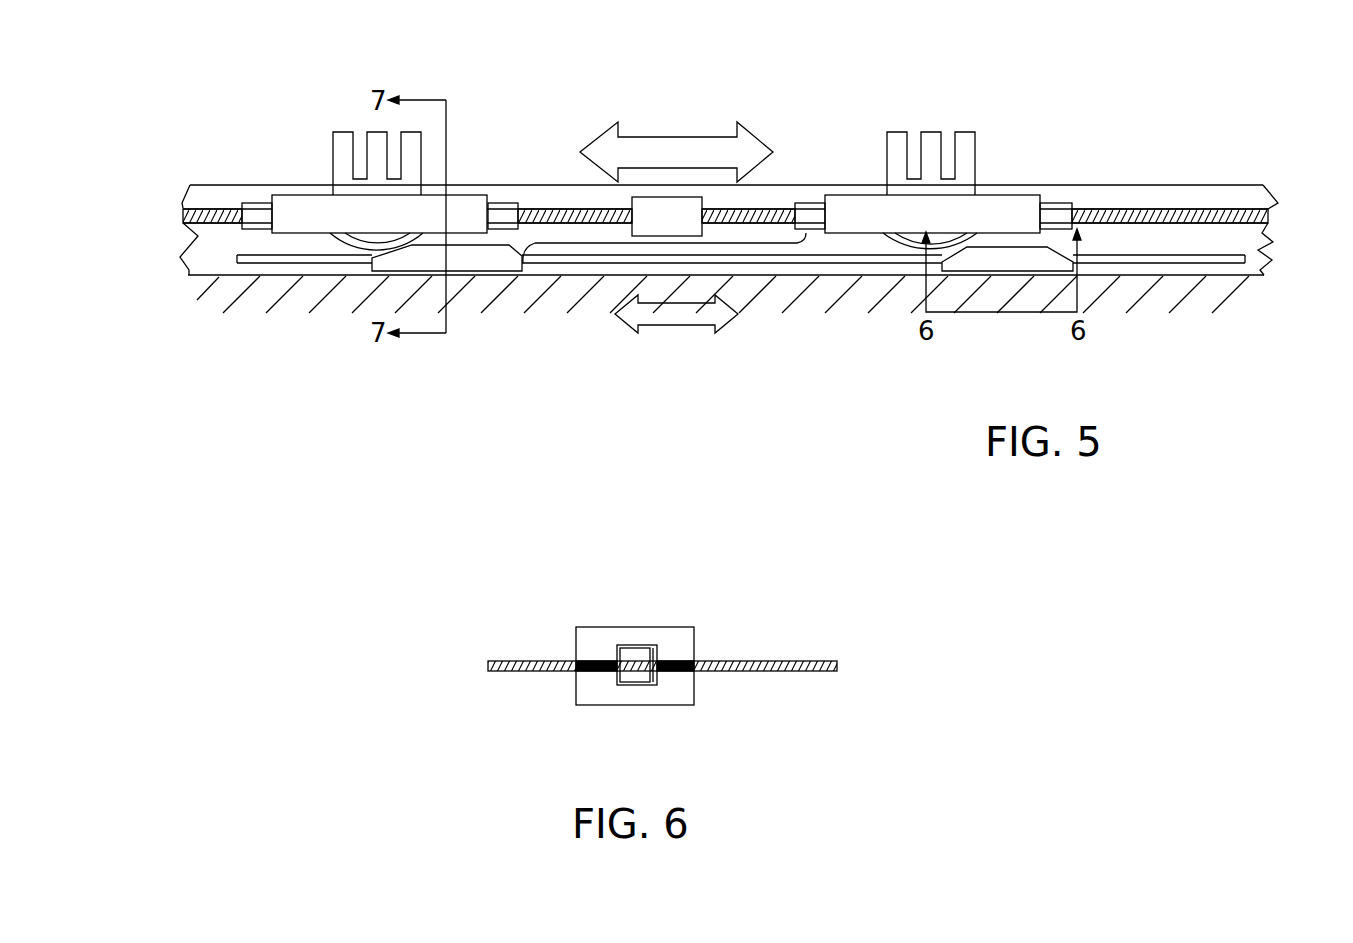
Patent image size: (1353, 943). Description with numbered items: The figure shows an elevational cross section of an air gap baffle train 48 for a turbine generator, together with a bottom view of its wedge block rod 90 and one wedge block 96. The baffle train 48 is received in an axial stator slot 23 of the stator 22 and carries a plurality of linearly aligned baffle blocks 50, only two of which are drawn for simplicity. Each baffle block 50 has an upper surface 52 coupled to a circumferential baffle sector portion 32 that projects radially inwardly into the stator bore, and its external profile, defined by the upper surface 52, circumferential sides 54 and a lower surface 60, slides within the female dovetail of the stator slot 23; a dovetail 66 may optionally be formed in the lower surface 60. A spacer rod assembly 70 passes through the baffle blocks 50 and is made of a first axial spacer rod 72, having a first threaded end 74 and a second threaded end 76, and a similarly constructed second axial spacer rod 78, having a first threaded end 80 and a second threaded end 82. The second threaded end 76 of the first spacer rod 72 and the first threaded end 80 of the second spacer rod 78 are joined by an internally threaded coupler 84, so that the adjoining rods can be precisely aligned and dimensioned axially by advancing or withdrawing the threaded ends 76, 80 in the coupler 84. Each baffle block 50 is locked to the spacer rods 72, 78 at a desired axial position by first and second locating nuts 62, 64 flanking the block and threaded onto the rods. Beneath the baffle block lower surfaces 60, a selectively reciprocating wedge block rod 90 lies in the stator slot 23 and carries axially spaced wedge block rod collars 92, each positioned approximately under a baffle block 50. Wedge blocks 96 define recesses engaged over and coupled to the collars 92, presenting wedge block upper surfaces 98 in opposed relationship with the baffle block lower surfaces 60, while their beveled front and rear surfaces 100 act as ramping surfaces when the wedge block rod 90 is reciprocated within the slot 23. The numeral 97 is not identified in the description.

In FIG. 5, the stator 22 is at (1165, 290).
In FIG. 5, the stator slot 23 is at (217, 248).
In FIG. 5, the baffle sector portion 32 is at (338, 147).
In FIG. 5, the baffle train 48 is at (1286, 183).
In FIG. 5, the baffle block 50 is at (278, 245).
In FIG. 5, the upper surface 52 is at (318, 195).
In FIG. 5, the circumferential side 54 is at (300, 232).
In FIG. 5, the lower surface 60 is at (295, 233).
In FIG. 5, the first locating nut 62 is at (262, 213).
In FIG. 5, the second locating nut 64 is at (519, 212).
In FIG. 5, the dovetail 66 is at (383, 228).
In FIG. 5, the spacer rod assembly 70 is at (677, 243).
In FIG. 5, the first axial spacer rod 72 is at (563, 208).
In FIG. 5, the first threaded end 74 is at (533, 186).
In FIG. 5, the second threaded end 76 is at (630, 210).
In FIG. 5, the second axial spacer rod 78 is at (190, 194).
In FIG. 5, the first threaded end 80 is at (702, 226).
In FIG. 5, the second threaded end 82 is at (803, 233).
In FIG. 5, the threaded coupler 84 is at (651, 224).
In FIG. 6, the wedge block rod 90 is at (733, 670).
In FIG. 6, the wedge block rod collar 92 is at (627, 677).
In FIG. 5, the wedge block 96 is at (463, 258).
In FIG. 6, the wedge block 96 is at (604, 637).
In FIG. 6, the bore 97 is at (572, 672).
In FIG. 5, the wedge block upper surface 98 is at (505, 208).
In FIG. 5, the beveled front and rear surfaces 100 is at (428, 225).